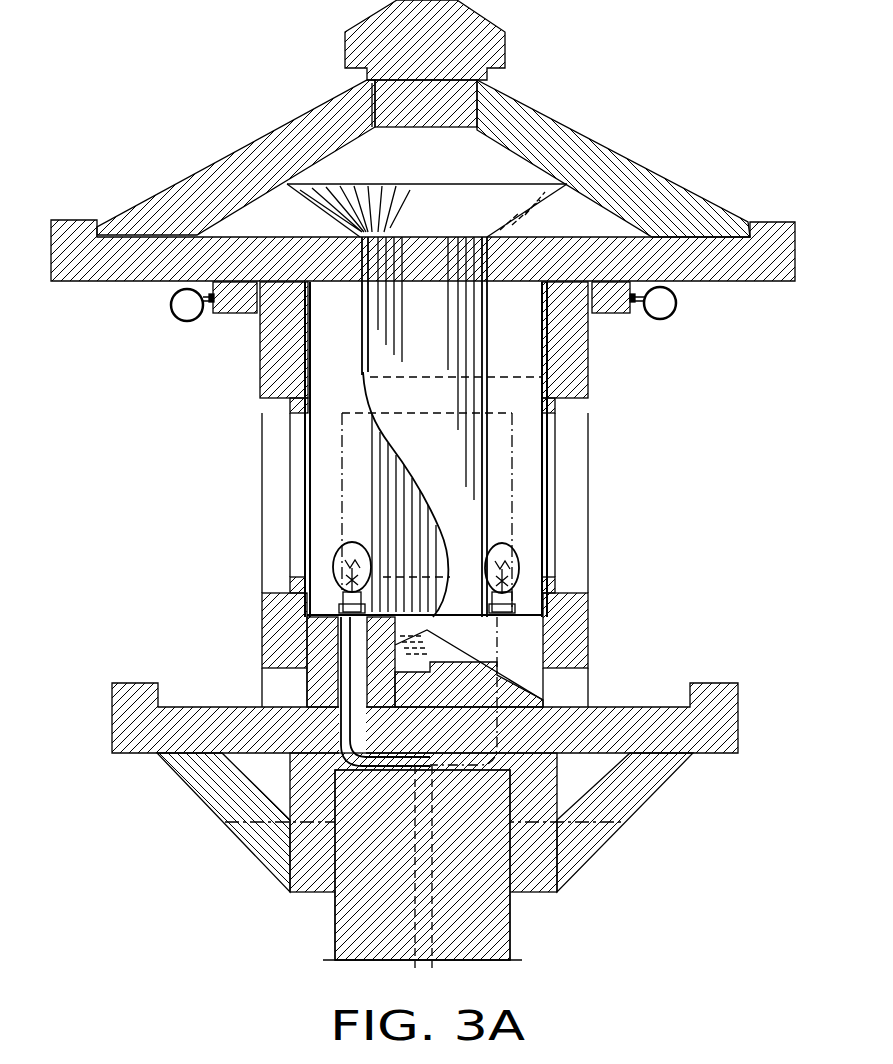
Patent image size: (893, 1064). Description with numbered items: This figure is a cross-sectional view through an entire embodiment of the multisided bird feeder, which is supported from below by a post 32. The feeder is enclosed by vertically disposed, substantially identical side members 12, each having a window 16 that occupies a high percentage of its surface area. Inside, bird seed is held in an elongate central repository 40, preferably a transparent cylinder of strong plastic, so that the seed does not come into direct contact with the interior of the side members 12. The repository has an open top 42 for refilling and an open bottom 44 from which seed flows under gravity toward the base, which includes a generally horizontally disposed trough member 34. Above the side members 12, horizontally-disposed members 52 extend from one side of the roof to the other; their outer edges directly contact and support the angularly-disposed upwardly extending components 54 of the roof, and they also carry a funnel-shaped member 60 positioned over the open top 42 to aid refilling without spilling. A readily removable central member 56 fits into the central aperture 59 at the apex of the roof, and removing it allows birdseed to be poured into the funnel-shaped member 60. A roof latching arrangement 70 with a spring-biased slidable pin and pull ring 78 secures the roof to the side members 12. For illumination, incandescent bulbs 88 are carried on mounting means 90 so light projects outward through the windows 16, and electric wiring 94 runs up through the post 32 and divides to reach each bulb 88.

The side members 12 is at (267, 377).
The window 16 is at (298, 478).
The post 32 is at (345, 912).
The trough member 34 is at (182, 708).
The central repository 40 is at (488, 452).
The open top 42 is at (443, 235).
The open bottom 44 is at (448, 626).
The horizontally-disposed members 52 is at (128, 270).
The angularly-disposed upwardly extending components 54 is at (197, 180).
The central member 56 is at (488, 27).
The central aperture 59 is at (372, 90).
The funnel-shaped member 60 is at (510, 215).
The roof latching arrangement 70 is at (193, 338).
The pull ring 78 is at (667, 320).
The incandescent bulbs 88 is at (340, 557).
The mounting means 90 is at (318, 640).
The electric wiring 94 is at (352, 665).